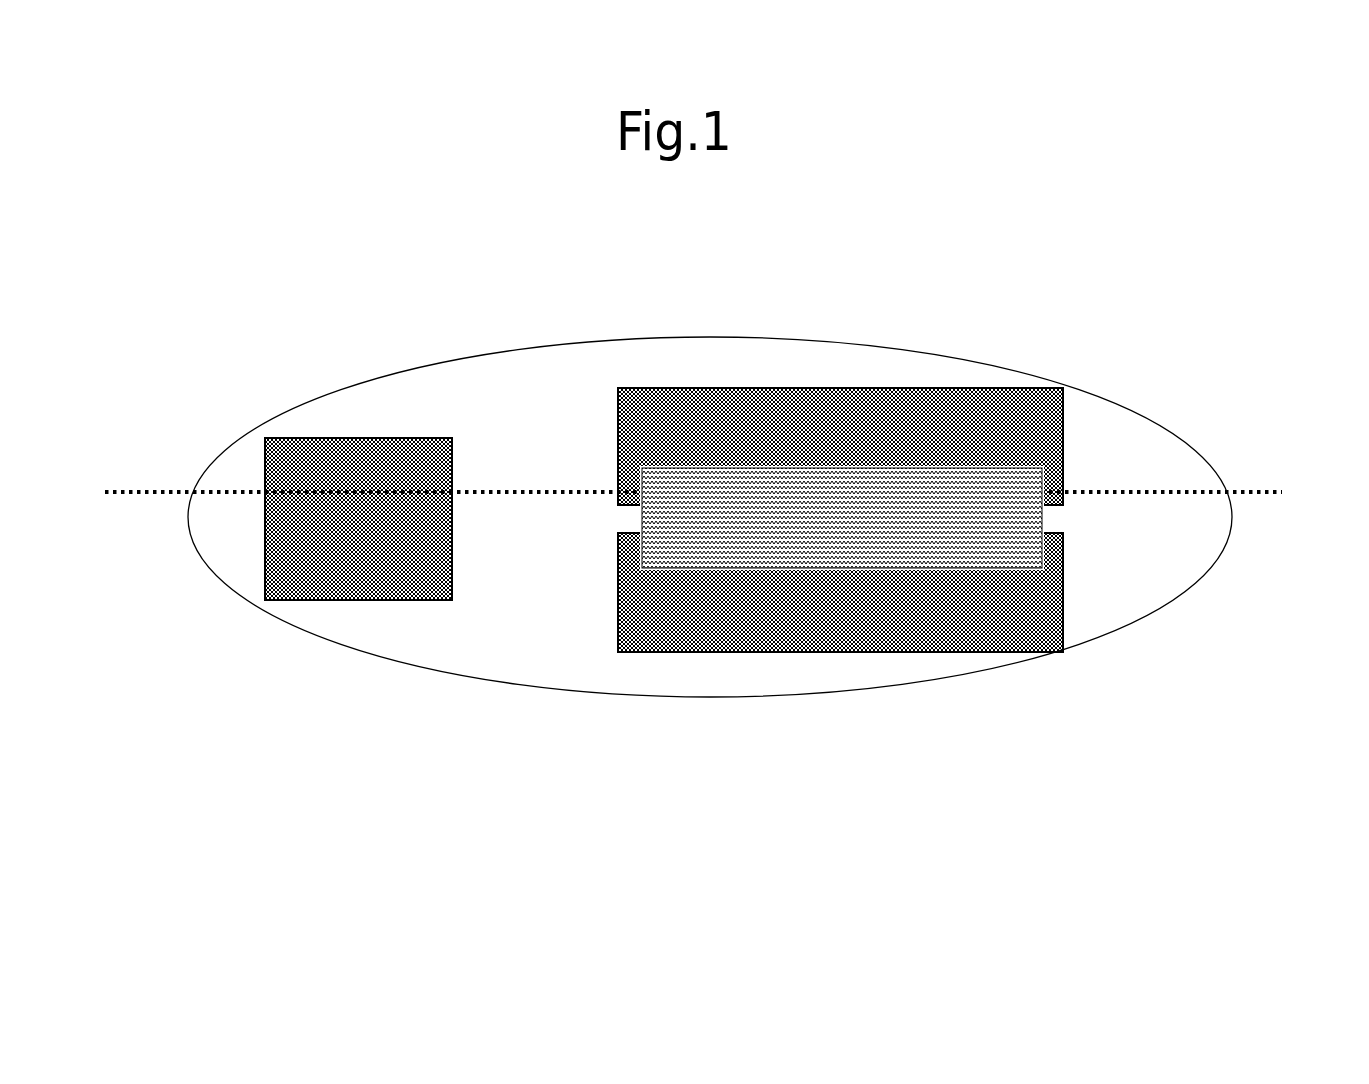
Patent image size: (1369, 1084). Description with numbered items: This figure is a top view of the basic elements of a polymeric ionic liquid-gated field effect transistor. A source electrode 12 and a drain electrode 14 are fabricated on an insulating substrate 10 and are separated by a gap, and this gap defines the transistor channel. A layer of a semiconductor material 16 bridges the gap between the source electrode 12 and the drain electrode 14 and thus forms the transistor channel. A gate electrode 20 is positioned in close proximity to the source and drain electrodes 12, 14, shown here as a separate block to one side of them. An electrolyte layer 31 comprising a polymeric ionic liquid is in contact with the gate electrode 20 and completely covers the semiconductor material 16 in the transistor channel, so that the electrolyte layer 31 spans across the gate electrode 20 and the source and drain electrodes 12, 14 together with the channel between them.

The insulating substrate 10 is at (348, 340).
The source electrode 12 is at (825, 403).
The drain electrode 14 is at (823, 633).
The semiconductor material 16 is at (880, 545).
The gate electrode 20 is at (277, 590).
The electrolyte layer 31 is at (555, 642).